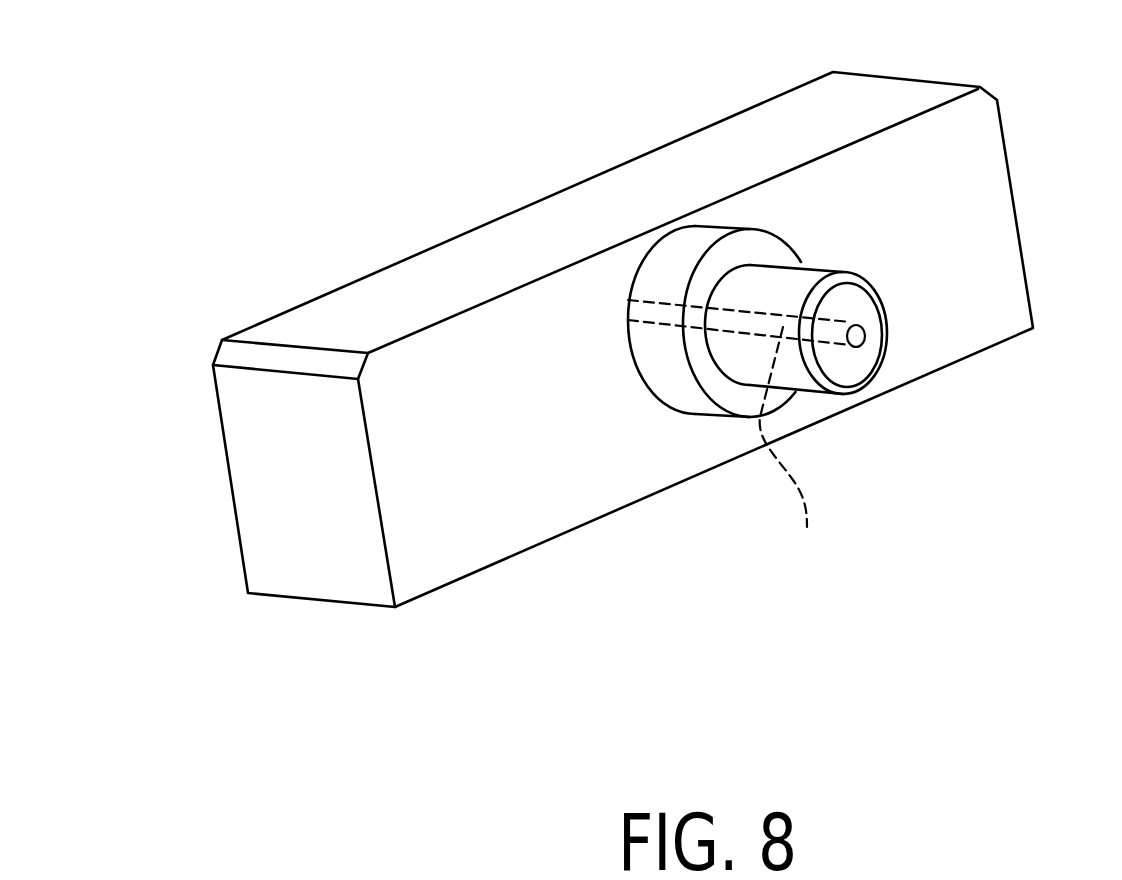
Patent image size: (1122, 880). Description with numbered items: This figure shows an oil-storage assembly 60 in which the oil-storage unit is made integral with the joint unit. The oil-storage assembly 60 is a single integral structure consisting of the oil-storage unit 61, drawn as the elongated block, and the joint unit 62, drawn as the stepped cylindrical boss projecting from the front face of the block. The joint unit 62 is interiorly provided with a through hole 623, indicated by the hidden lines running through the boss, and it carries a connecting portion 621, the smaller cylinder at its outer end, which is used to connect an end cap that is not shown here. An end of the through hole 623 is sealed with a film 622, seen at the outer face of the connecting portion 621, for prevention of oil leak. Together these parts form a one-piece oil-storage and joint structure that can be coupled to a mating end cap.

The oil-storage assembly 60 is at (433, 182).
The oil-storage unit 61 is at (317, 497).
The joint unit 62 is at (688, 413).
The connecting portion 621 is at (783, 288).
The film 622 is at (865, 336).
The through hole 623 is at (796, 459).